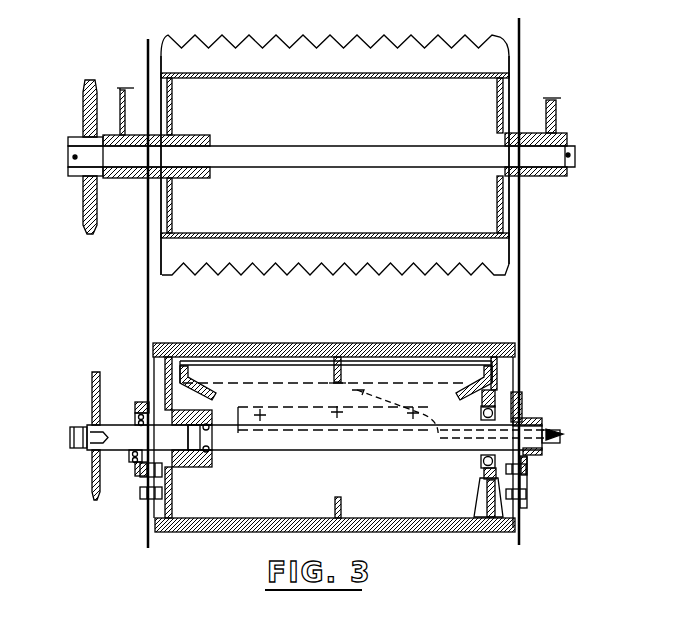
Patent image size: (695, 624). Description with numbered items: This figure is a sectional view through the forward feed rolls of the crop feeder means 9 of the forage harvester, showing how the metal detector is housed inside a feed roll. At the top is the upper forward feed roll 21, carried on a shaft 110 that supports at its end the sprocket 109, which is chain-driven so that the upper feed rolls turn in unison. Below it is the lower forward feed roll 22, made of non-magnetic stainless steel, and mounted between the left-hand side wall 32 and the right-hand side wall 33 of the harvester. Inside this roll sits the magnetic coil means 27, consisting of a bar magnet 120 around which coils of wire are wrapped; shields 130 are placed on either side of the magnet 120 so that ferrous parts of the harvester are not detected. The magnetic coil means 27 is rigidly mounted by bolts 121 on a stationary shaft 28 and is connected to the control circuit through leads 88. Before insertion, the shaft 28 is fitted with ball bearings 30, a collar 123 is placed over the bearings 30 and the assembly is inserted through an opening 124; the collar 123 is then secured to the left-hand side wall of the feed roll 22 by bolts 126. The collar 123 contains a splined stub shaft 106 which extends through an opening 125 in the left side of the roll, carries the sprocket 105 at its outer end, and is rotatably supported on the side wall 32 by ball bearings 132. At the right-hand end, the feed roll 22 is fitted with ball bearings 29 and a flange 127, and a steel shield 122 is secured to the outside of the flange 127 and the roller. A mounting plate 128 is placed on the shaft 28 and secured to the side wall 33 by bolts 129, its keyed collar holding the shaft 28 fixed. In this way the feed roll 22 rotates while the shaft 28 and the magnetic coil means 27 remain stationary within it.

The crop feeder means 9 is at (566, 226).
The upper forward feed roll 21 is at (162, 50).
The lower forward feed roll 22 is at (173, 343).
The magnetic coil means 27 is at (273, 363).
The stationary shaft 28 is at (542, 445).
The ball bearings 29 is at (483, 462).
The ball bearings 30 is at (213, 455).
The side wall 32 is at (148, 262).
The side wall 33 is at (523, 272).
The leads 88 is at (392, 392).
The sprocket 105 is at (88, 498).
The splined stub shaft 106 is at (92, 369).
The sprocket 109 is at (85, 208).
The shaft 110 is at (350, 165).
The bar magnet 120 is at (504, 400).
The bolts 121 is at (510, 382).
The steel shield 122 is at (520, 507).
The collar 123 is at (200, 467).
The opening 124 is at (513, 398).
The opening 125 is at (147, 476).
The bolts 126 is at (153, 410).
The flange 127 is at (483, 487).
The mounting plate 128 is at (524, 463).
The bolts 129 is at (528, 473).
The shields 130 is at (177, 365).
The ball bearings 132 is at (135, 460).